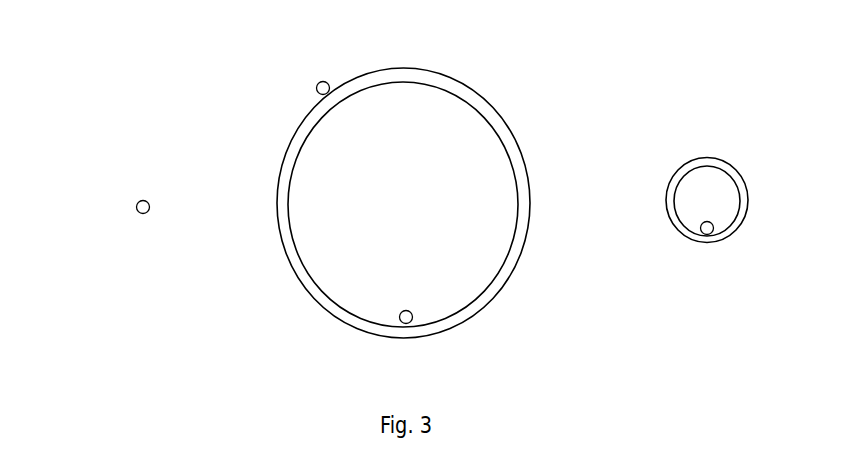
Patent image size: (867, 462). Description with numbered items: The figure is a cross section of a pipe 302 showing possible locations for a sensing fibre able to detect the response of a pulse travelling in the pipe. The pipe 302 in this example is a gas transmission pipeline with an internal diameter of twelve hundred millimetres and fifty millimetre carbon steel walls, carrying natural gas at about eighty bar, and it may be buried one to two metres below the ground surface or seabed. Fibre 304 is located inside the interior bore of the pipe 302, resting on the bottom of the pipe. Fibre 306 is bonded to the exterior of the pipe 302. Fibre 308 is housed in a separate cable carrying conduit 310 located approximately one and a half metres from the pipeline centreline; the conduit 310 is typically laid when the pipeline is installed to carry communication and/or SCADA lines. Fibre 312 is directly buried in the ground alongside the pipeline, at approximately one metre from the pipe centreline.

The pipe 302 is at (293, 280).
The fibre 304 is at (412, 321).
The fibre 306 is at (316, 83).
The fibre 308 is at (707, 243).
The cable carrying conduit 310 is at (690, 160).
The fibre 312 is at (138, 212).